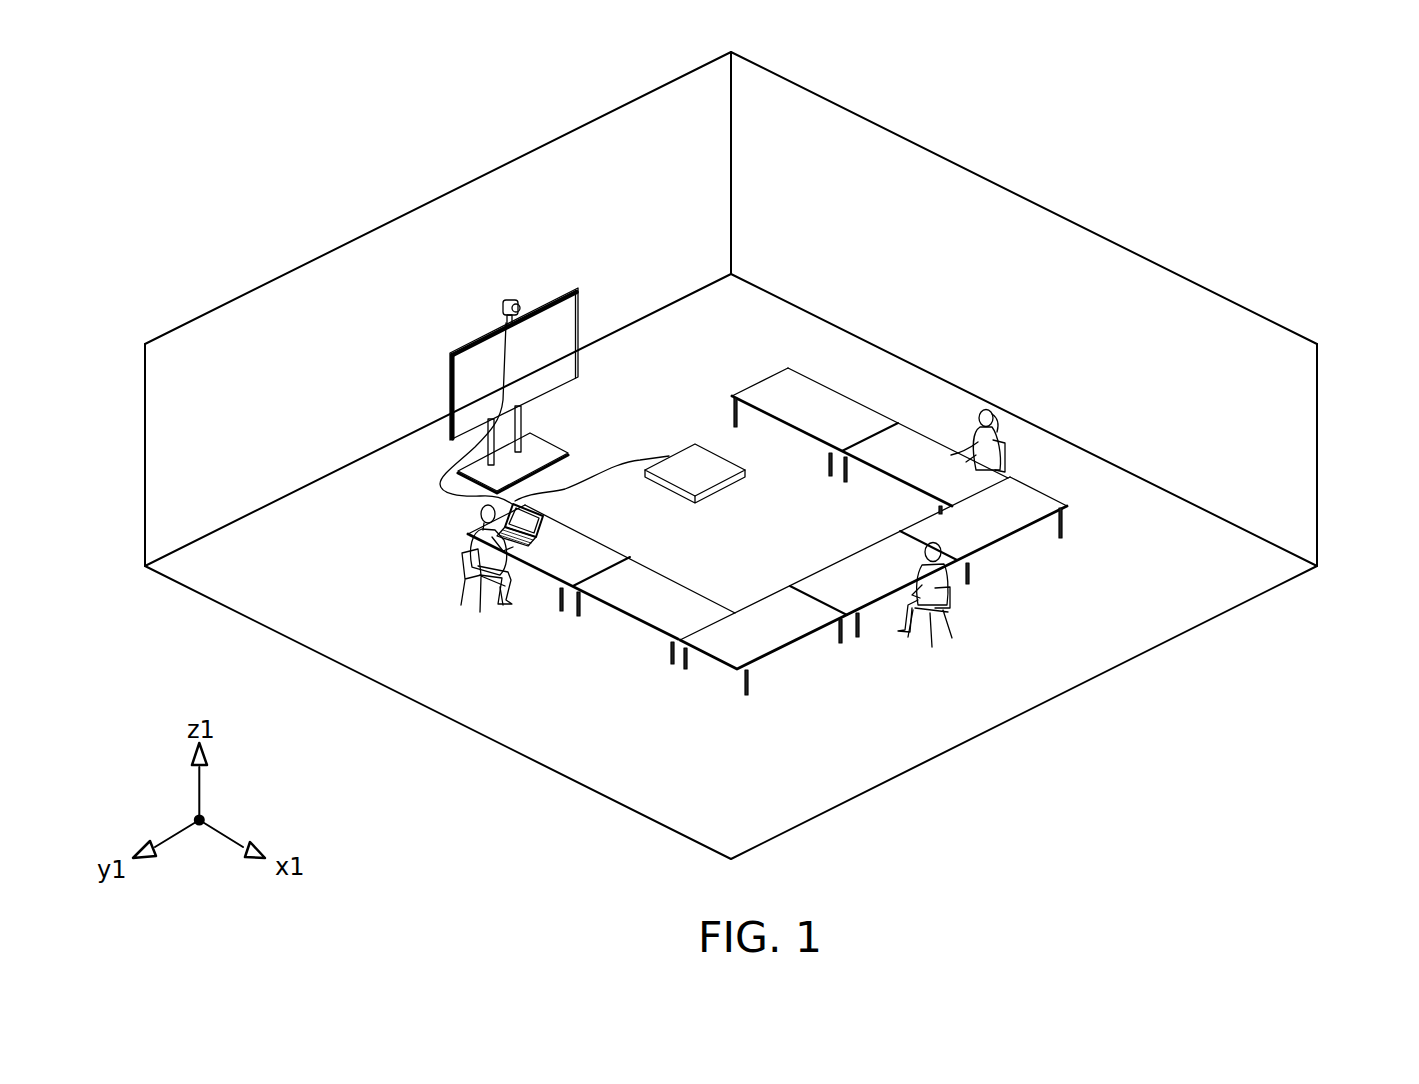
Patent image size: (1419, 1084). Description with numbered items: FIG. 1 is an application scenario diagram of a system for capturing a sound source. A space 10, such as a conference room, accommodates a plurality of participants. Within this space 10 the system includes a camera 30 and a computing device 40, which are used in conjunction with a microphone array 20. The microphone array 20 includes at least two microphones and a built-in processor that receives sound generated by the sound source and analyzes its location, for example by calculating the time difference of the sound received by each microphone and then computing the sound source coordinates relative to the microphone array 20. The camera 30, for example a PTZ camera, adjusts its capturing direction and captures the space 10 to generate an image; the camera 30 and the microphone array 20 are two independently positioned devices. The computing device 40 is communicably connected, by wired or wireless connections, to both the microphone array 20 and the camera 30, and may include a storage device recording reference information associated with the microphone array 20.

The space 10 is at (1317, 456).
The microphone array 20 is at (695, 444).
The camera 30 is at (504, 298).
The computing device 40 is at (524, 546).